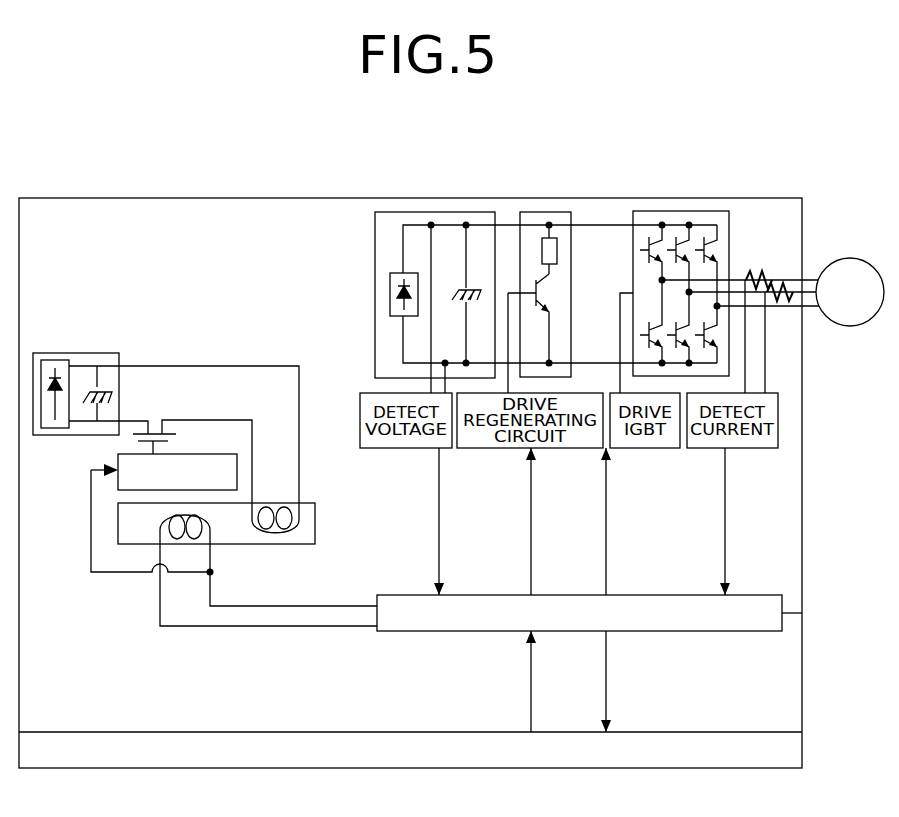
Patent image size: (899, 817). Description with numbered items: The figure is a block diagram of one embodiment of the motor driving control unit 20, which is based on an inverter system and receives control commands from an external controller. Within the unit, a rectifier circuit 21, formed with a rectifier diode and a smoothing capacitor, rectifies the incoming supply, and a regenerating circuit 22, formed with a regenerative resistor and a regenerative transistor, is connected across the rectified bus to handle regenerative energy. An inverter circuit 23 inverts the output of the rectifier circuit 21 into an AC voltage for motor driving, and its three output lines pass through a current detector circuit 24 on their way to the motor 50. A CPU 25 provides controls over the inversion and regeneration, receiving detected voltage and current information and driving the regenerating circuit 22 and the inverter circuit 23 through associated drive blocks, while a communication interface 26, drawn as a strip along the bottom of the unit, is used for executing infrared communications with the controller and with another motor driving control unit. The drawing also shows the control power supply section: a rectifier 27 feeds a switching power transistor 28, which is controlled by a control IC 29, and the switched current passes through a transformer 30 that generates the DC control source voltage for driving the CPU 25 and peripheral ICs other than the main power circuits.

The motor driving control unit 20 is at (665, 195).
The rectifier circuit 21 is at (446, 211).
The regenerating circuit 22 is at (549, 211).
The inverter circuit 23 is at (714, 211).
The current detector circuit 24 is at (758, 276).
The CPU 25 is at (802, 613).
The communication interface 26 is at (793, 753).
The control power rectifier circuit 27 is at (84, 353).
The switching power transistor 28 is at (155, 420).
The control IC 29 is at (203, 454).
The transformer 30 is at (308, 503).
The motor 50 is at (852, 326).